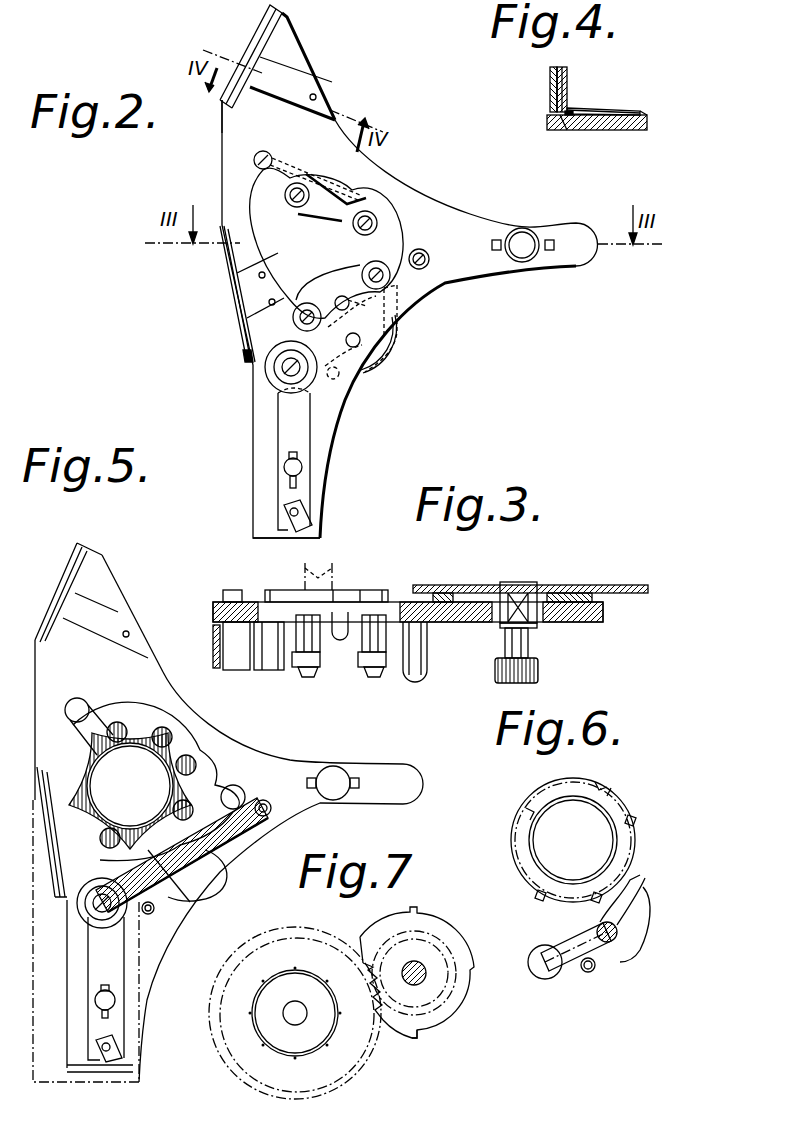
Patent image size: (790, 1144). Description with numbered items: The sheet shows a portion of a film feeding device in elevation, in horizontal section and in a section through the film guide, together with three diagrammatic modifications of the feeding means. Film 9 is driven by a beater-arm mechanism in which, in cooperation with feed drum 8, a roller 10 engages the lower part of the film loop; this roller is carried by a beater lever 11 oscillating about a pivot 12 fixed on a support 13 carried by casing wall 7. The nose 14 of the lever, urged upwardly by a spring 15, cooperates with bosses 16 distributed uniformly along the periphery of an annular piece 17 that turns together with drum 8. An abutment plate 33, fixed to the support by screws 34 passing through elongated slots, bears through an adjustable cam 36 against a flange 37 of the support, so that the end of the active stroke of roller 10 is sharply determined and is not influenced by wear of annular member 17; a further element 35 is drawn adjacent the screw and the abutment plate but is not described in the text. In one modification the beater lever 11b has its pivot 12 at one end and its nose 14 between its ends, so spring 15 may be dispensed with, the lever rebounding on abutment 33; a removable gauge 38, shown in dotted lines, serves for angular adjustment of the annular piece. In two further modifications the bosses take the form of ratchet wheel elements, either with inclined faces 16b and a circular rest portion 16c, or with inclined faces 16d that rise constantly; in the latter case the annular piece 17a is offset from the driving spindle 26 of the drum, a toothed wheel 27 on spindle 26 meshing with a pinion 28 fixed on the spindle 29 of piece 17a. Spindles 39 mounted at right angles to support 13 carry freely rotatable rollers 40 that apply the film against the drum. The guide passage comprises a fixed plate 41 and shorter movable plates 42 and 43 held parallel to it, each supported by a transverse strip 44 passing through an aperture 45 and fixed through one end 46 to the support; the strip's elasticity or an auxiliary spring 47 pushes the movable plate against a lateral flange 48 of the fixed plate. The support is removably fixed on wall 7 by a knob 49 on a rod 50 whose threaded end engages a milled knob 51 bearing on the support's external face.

In FIG. 3, the casing wall 7 is at (597, 586).
In FIG. 5, the feed drum 8 is at (130, 788).
In FIG. 6, the feed drum 8 is at (560, 820).
In FIG. 7, the feed drum 8 is at (270, 1003).
In FIG. 4, the film 9 is at (566, 82).
In FIG. 2, the roller 10 is at (300, 375).
In FIG. 5, the roller 10 is at (120, 913).
In FIG. 6, the roller 10 is at (545, 967).
In FIG. 2, the beater lever 11 is at (392, 338).
In FIG. 3, the beater lever 11 is at (347, 594).
In FIG. 6, the beater lever 11 is at (590, 970).
In FIG. 5, the beater lever 11b is at (218, 832).
In FIG. 2, the pivot 12 is at (356, 345).
In FIG. 5, the pivot 12 is at (265, 803).
In FIG. 6, the pivot 12 is at (597, 930).
In FIG. 2, the support 13 is at (462, 238).
In FIG. 4, the support 13 is at (617, 128).
In FIG. 3, the support 13 is at (445, 612).
In FIG. 2, the nose 14 is at (400, 297).
In FIG. 5, the nose 14 is at (160, 860).
In FIG. 6, the nose 14 is at (632, 880).
In FIG. 2, the spring 15 is at (393, 352).
In FIG. 5, the spring 15 is at (212, 880).
In FIG. 6, the spring 15 is at (639, 952).
In FIG. 5, the bosses 16 is at (192, 768).
In FIG. 6, the inclined faces 16b is at (633, 822).
In FIG. 6, the circular rest portion 16c is at (540, 897).
In FIG. 7, the inclined faces 16d is at (416, 1037).
In FIG. 5, the annular piece 17 is at (145, 738).
In FIG. 6, the annular piece 17 is at (590, 793).
In FIG. 7, the annular piece 17a is at (440, 933).
In FIG. 7, the driving spindle 26 is at (292, 1006).
In FIG. 7, the toothed wheel 27 is at (232, 1060).
In FIG. 7, the pinion 28 is at (385, 1014).
In FIG. 7, the spindle 29 is at (425, 978).
In FIG. 2, the abutment plate 33 is at (289, 428).
In FIG. 2, the screws 34 is at (284, 468).
In FIG. 2, the stem 35 is at (297, 487).
In FIG. 2, the cam 36 is at (307, 517).
In FIG. 2, the flange 37 is at (260, 538).
In FIG. 5, the gauge 38 is at (33, 970).
In FIG. 2, the spindles 39 is at (298, 193).
In FIG. 3, the spindles 39 is at (305, 670).
In FIG. 2, the rollers 40 is at (368, 220).
In FIG. 3, the rollers 40 is at (368, 664).
In FIG. 2, the plate 41 is at (224, 118).
In FIG. 4, the plate 41 is at (572, 106).
In FIG. 3, the plate 41 is at (232, 640).
In FIG. 2, the movable plate 42 is at (262, 34).
In FIG. 4, the movable plate 42 is at (549, 99).
In FIG. 2, the movable plate 43 is at (233, 300).
In FIG. 3, the movable plate 43 is at (214, 652).
In FIG. 2, the strip 44 is at (288, 80).
In FIG. 4, the strip 44 is at (628, 110).
In FIG. 3, the strip 44 is at (260, 630).
In FIG. 4, the aperture 45 is at (562, 113).
In FIG. 2, the end 46 is at (317, 97).
In FIG. 4, the end 46 is at (644, 112).
In FIG. 4, the auxiliary spring 47 is at (565, 130).
In FIG. 3, the auxiliary spring 47 is at (250, 600).
In FIG. 4, the lateral flange 48 is at (553, 69).
In FIG. 3, the knob 49 is at (518, 590).
In FIG. 3, the rod 50 is at (530, 626).
In FIG. 2, the milled knob 51 is at (523, 250).
In FIG. 3, the milled knob 51 is at (540, 670).